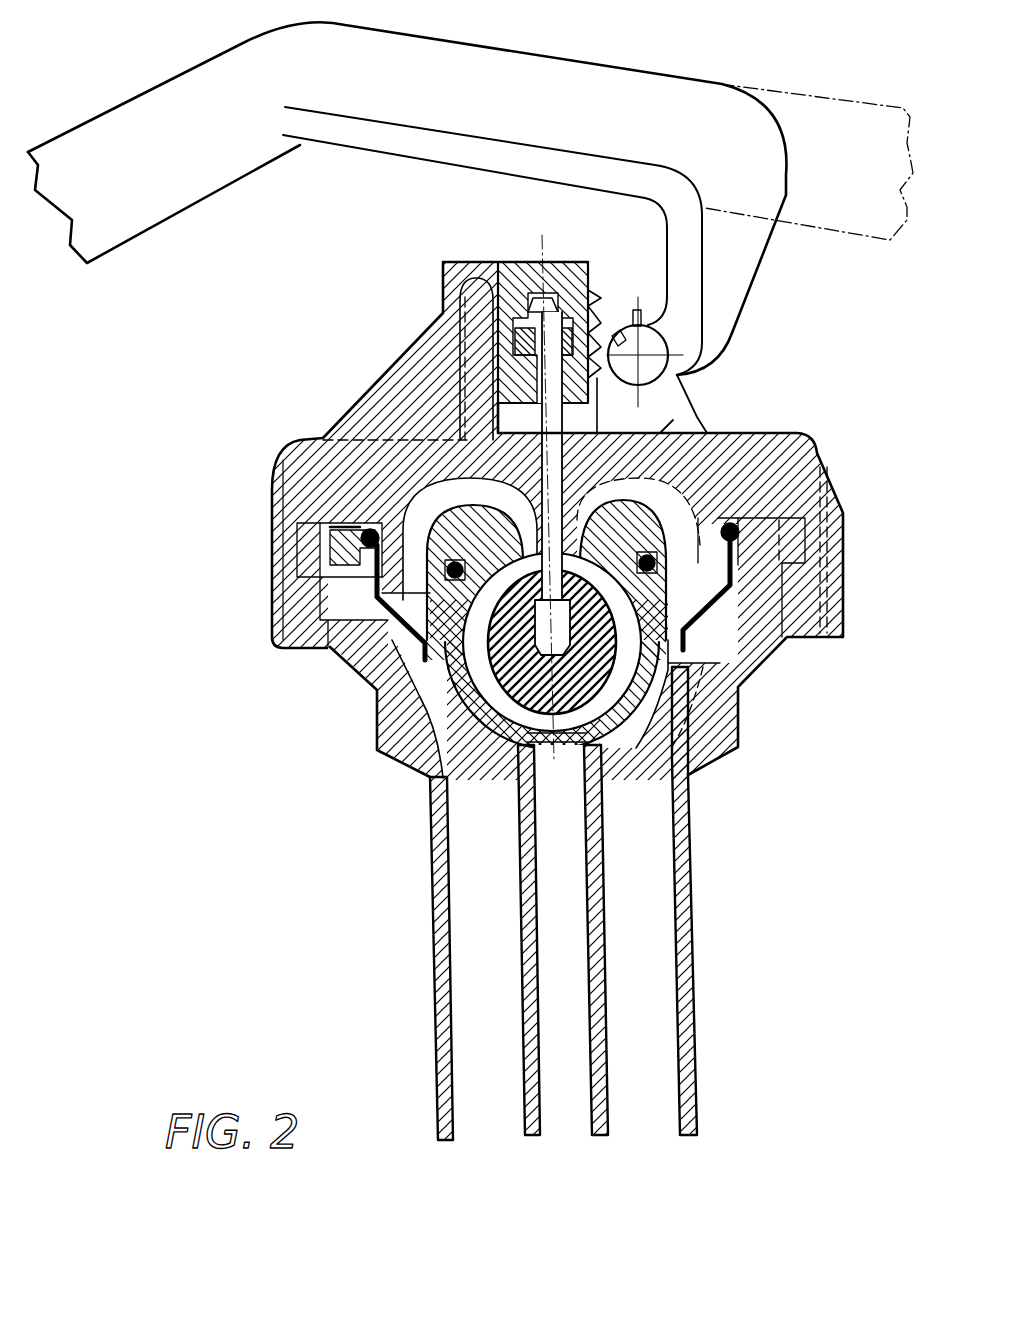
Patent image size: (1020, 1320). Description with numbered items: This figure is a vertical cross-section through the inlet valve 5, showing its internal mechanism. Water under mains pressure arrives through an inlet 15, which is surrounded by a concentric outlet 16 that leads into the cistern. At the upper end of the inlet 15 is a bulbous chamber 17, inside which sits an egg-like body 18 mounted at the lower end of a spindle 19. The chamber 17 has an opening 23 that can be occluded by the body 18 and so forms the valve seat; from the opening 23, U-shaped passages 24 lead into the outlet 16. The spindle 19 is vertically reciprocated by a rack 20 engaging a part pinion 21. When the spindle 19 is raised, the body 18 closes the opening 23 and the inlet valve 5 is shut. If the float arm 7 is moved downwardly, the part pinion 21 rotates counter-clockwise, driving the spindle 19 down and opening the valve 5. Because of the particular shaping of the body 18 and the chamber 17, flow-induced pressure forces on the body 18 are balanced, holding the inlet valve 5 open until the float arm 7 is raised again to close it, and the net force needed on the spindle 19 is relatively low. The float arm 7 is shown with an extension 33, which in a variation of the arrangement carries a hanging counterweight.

The inlet valve 5 is at (495, 690).
The float arm 7 is at (535, 85).
The inlet 15 is at (563, 992).
The outlet 16 is at (647, 900).
The bulbous chamber 17 is at (593, 712).
The egg-like body 18 is at (587, 680).
The spindle 19 is at (555, 483).
The rack 20 is at (605, 278).
The part pinion 21 is at (620, 310).
The opening 23 is at (530, 505).
The U-shaped passages 24 is at (415, 542).
The extension 33 is at (808, 127).